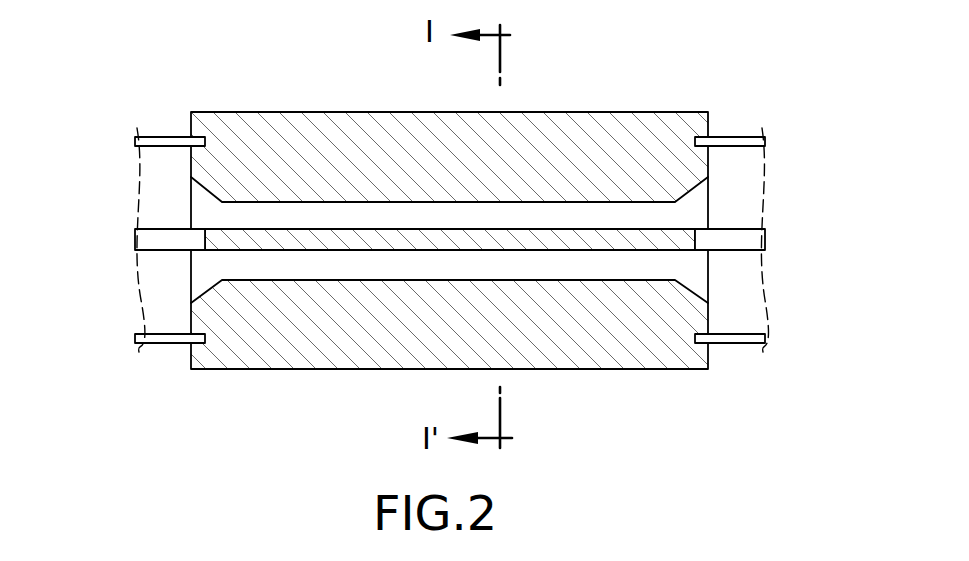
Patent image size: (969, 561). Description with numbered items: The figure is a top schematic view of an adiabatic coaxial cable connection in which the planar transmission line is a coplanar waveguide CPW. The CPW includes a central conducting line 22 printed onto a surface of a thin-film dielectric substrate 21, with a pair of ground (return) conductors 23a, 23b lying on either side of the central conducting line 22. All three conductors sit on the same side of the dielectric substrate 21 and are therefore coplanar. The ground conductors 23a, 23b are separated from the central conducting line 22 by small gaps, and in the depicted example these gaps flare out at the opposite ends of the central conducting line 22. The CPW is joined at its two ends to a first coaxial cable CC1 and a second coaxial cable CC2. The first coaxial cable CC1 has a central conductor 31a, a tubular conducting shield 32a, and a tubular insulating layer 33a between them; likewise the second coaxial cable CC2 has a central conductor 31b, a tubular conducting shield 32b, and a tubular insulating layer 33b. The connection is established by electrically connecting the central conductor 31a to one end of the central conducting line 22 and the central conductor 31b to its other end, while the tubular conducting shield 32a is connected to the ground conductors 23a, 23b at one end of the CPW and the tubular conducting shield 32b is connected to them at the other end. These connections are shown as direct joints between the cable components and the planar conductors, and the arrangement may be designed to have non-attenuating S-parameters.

The dielectric substrate 21 is at (305, 212).
The central conducting line 22 is at (560, 238).
The ground conductor 23a is at (650, 133).
The ground conductor 23b is at (622, 337).
The central conductor 31a is at (168, 248).
The central conductor 31b is at (735, 252).
The tubular conducting shield 32a is at (167, 342).
The tubular conducting shield 32b is at (743, 345).
The tubular insulating layer 33a is at (168, 171).
The tubular insulating layer 33b is at (732, 170).
The first coaxial cable CC1 is at (143, 198).
The second coaxial cable CC2 is at (757, 182).
The coplanar waveguide CPW is at (331, 384).